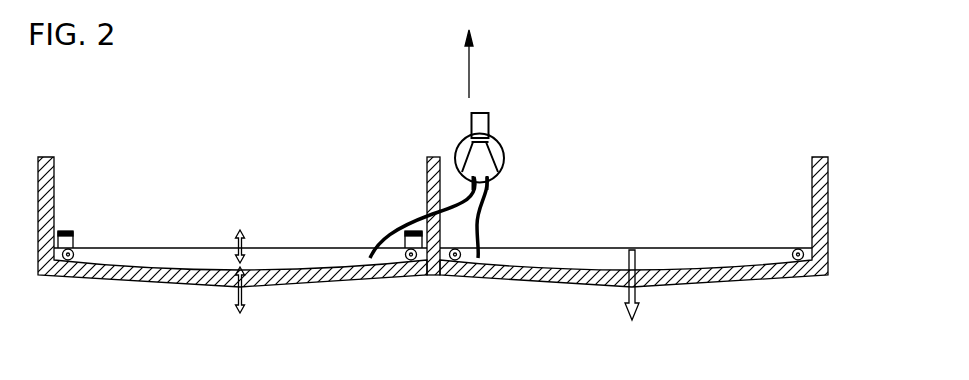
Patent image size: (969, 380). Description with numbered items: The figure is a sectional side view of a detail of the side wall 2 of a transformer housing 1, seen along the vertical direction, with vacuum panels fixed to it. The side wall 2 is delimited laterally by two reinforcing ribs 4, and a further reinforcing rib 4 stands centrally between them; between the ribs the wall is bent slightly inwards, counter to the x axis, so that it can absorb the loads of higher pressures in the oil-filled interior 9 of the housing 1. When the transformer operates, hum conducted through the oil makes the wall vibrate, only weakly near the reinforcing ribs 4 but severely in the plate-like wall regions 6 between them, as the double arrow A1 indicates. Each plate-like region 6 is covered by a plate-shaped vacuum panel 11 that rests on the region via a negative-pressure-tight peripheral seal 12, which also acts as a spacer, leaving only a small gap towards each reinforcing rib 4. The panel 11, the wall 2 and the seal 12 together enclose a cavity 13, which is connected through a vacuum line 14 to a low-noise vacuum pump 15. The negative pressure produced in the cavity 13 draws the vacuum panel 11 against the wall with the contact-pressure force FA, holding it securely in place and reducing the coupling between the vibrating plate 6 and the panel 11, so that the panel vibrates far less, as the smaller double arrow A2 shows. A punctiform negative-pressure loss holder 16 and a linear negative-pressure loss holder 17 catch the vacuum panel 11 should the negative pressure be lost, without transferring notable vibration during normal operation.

The housing 1 is at (466, 224).
The side wall 2 is at (829, 234).
The reinforcing rib 4 is at (46, 157).
The plate-like wall region 6 is at (304, 288).
The interior 9 is at (424, 356).
The vacuum panel 11 is at (189, 248).
The peripheral seal 12 is at (70, 262).
The cavity 13 is at (313, 258).
The vacuum line 14 is at (386, 232).
The vacuum pump 15 is at (505, 154).
The punctiform negative-pressure loss holder 16 is at (410, 229).
The linear negative-pressure loss holder 17 is at (68, 230).
The double arrow A1 is at (235, 296).
The smaller double arrow A2 is at (242, 232).
The contact-pressure force FA is at (629, 303).
The x axis x is at (478, 61).